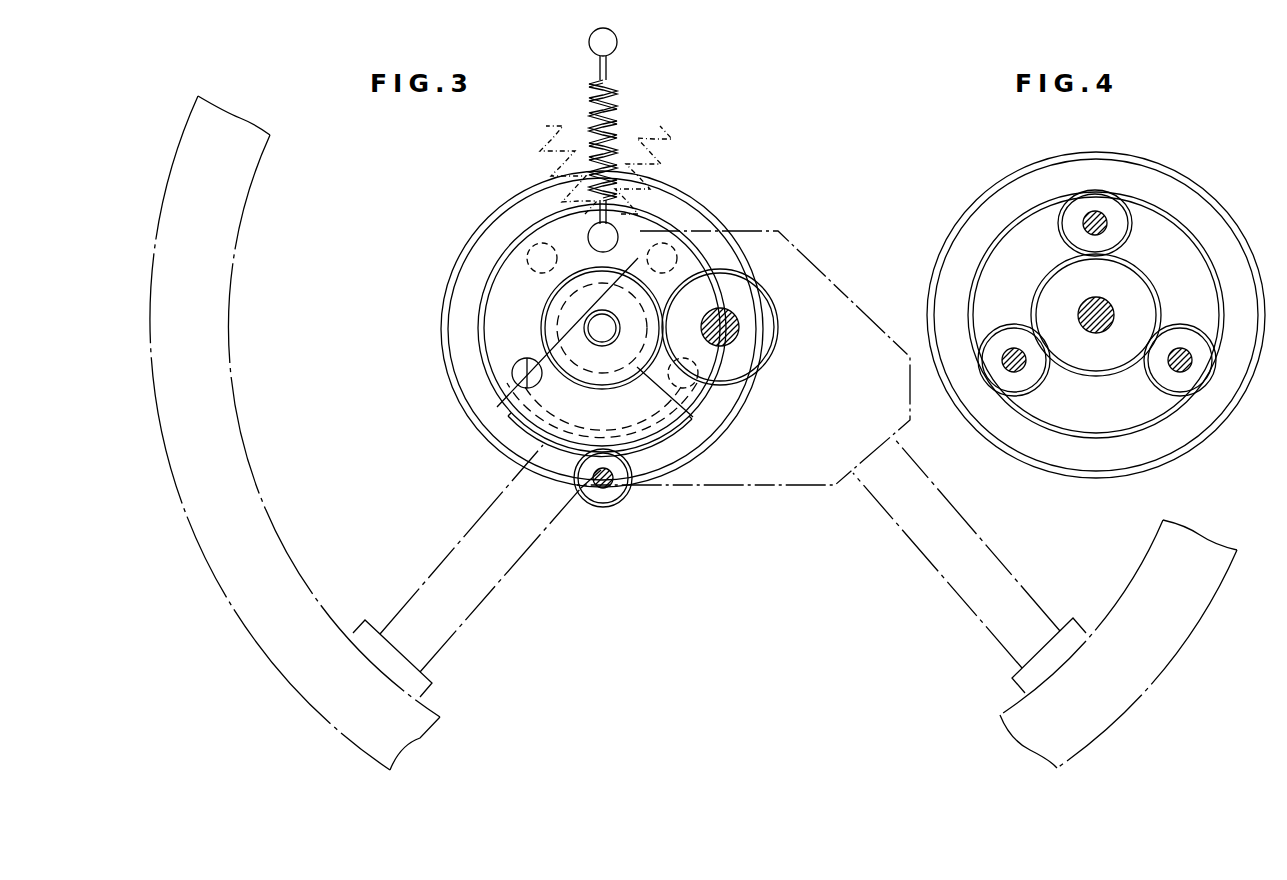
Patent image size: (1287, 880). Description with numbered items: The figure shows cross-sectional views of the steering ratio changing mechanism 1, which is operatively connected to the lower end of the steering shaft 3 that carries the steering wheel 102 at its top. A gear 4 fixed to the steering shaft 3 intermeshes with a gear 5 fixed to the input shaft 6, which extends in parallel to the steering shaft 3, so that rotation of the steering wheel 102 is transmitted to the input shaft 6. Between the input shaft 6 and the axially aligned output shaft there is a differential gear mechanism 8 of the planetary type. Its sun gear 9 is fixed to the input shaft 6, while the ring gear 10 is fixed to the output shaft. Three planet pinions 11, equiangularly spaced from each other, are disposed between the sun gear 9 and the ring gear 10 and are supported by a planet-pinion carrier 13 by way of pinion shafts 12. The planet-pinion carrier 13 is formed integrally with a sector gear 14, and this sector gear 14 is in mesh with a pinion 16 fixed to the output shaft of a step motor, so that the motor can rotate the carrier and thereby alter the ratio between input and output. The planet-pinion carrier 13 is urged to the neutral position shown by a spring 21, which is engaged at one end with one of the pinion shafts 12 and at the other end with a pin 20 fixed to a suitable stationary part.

In FIG. 3, the steering ratio changing mechanism 1 is at (740, 190).
In FIG. 4, the steering ratio changing mechanism 1 is at (1205, 182).
In FIG. 3, the steering shaft 3 is at (739, 320).
In FIG. 3, the gear 4 is at (781, 350).
In FIG. 3, the gear 5 is at (556, 290).
In FIG. 3, the input shaft 6 is at (585, 328).
In FIG. 4, the input shaft 6 is at (1108, 315).
In FIG. 3, the differential gear mechanism 8 is at (487, 205).
In FIG. 4, the differential gear mechanism 8 is at (970, 205).
In FIG. 4, the sun gear 9 is at (1138, 292).
In FIG. 3, the ring gear 10 is at (455, 312).
In FIG. 4, the ring gear 10 is at (960, 252).
In FIG. 3, the planet pinions 11 is at (652, 216).
In FIG. 4, the planet pinions 11 is at (1118, 230).
In FIG. 3, the pinion shafts 12 is at (620, 238).
In FIG. 4, the pinion shafts 12 is at (1092, 228).
In FIG. 3, the planet-pinion carrier 13 is at (493, 262).
In FIG. 3, the sector gear 14 is at (655, 470).
In FIG. 3, the pinion 16 is at (650, 492).
In FIG. 3, the pin 20 is at (618, 43).
In FIG. 3, the spring 21 is at (617, 100).
In FIG. 3, the steering wheel 102 is at (233, 276).